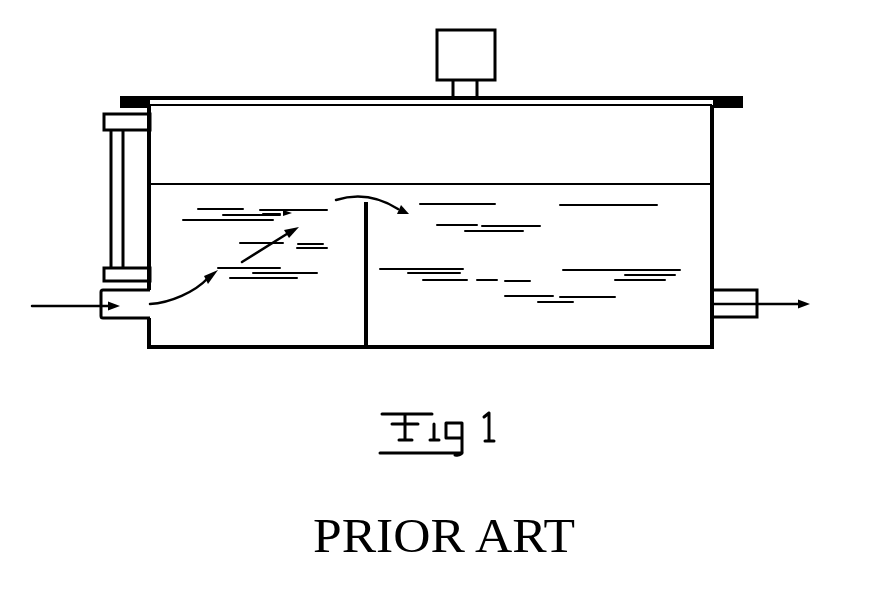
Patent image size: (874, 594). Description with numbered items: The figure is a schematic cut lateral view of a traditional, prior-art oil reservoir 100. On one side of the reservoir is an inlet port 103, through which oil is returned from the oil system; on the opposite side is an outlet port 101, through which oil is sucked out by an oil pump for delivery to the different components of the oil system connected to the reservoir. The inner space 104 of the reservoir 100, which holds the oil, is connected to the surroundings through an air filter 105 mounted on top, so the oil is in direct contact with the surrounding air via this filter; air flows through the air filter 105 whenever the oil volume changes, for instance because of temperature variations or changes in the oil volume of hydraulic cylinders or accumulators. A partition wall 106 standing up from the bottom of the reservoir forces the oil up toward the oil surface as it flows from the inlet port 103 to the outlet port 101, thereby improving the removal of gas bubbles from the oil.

The oil reservoir 100 is at (630, 67).
The outlet port 101 is at (763, 297).
The inlet port 103 is at (100, 292).
The inner space 104 is at (688, 157).
The air filter 105 is at (488, 55).
The partition wall 106 is at (367, 330).